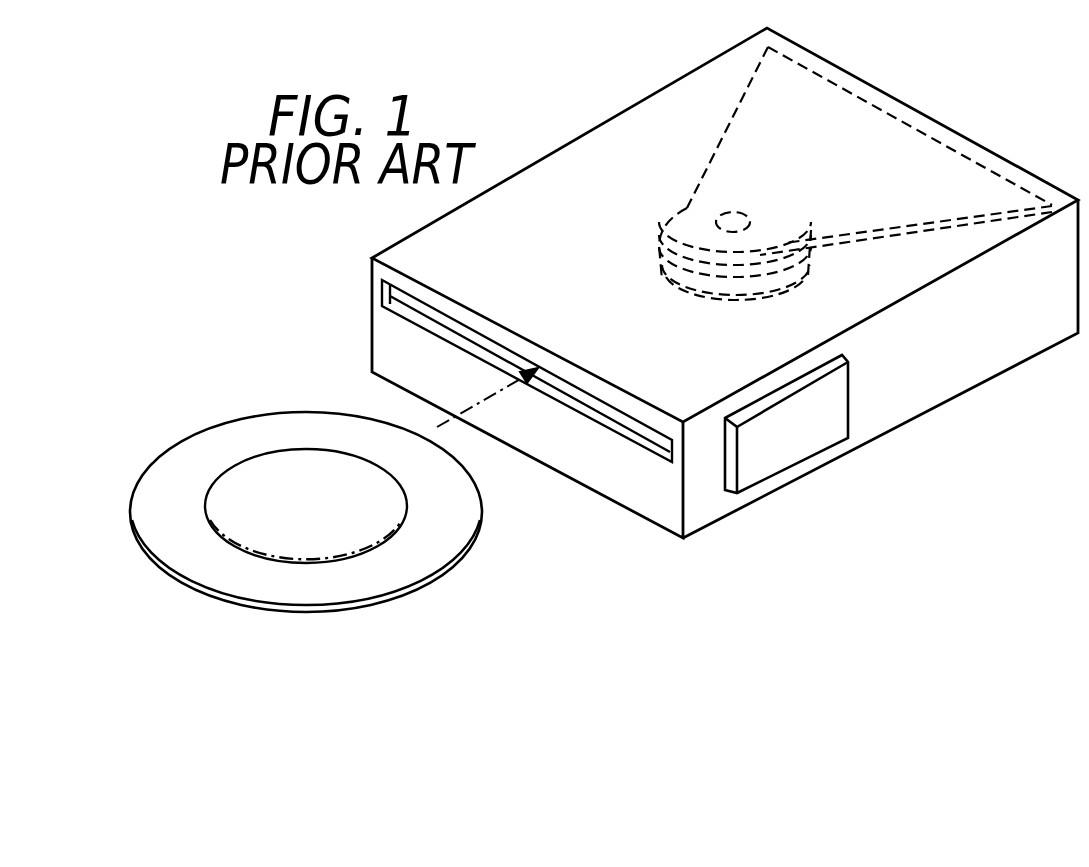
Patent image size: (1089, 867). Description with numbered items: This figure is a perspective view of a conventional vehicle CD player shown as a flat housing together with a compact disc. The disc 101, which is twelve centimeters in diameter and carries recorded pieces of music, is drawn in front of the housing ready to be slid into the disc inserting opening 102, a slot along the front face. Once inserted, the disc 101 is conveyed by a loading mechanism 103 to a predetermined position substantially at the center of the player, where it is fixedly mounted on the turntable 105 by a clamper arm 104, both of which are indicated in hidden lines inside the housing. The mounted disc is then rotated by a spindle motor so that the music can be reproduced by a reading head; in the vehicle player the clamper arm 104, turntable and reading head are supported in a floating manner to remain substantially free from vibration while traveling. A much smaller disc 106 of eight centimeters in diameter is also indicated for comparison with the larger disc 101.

The disc 101 is at (452, 556).
The disc inserting opening 102 is at (387, 297).
The loading mechanism 103 is at (800, 448).
The clamper arm 104 is at (742, 120).
The turntable 105 is at (657, 250).
The disc 106 is at (407, 505).